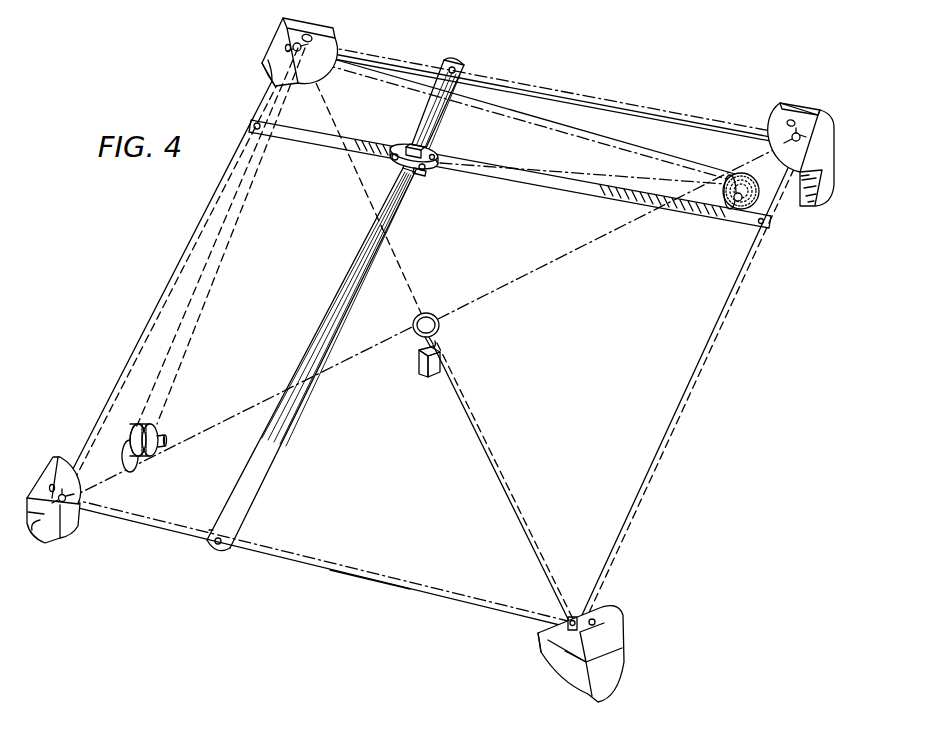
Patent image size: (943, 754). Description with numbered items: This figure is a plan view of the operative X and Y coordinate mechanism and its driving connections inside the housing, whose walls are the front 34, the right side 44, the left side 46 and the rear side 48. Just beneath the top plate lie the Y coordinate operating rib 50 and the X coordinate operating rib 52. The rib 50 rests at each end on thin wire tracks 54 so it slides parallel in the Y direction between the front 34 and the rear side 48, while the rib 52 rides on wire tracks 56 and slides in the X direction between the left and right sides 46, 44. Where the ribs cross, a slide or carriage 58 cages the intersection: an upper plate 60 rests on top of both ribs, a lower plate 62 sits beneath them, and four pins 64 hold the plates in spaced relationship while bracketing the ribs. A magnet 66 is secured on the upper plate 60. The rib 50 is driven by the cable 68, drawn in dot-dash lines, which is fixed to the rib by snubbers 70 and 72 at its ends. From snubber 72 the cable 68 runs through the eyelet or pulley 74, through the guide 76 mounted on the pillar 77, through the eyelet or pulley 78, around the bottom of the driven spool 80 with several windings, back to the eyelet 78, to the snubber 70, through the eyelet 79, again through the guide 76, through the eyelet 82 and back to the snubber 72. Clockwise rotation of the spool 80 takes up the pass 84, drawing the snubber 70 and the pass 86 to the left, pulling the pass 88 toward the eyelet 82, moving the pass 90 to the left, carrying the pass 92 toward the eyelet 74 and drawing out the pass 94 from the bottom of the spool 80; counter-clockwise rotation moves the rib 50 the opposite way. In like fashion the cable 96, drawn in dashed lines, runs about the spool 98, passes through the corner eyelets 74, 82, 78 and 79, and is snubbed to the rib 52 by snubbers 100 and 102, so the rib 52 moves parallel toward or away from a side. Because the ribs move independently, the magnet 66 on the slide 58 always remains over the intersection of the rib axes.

The front 34 is at (612, 661).
The right side 44 is at (787, 111).
The left side 46 is at (557, 668).
The rear side 48 is at (49, 456).
The Y coordinate operating rib 50 is at (262, 480).
The X coordinate operating rib 52 is at (612, 194).
The thin wire tracks 54 is at (508, 82).
The wire tracks 56 is at (194, 247).
The slide or carriage 58 is at (442, 153).
The upper plate 60 is at (435, 157).
The lower plate 62 is at (428, 172).
The pins 64 is at (394, 154).
The magnet 66 is at (409, 146).
The cable 68 is at (371, 562).
The snubber 70 is at (456, 67).
The snubber 72 is at (215, 549).
The eyelet or pulley 74 is at (574, 616).
The guide 76 is at (441, 327).
The pillar 77 is at (428, 378).
The eyelet or pulley 78 is at (306, 42).
The eyelet 79 is at (800, 132).
The driven spool 80 is at (746, 178).
The eyelet 82 is at (61, 520).
The pass 84 is at (662, 155).
The pass 86 is at (678, 112).
The pass 88 is at (222, 432).
The pass 90 is at (170, 528).
The pass 92 is at (497, 480).
The pass 94 is at (642, 162).
The cable 96 is at (222, 302).
The spool 98 is at (137, 427).
The snubber 100 is at (768, 222).
The snubber 102 is at (252, 124).